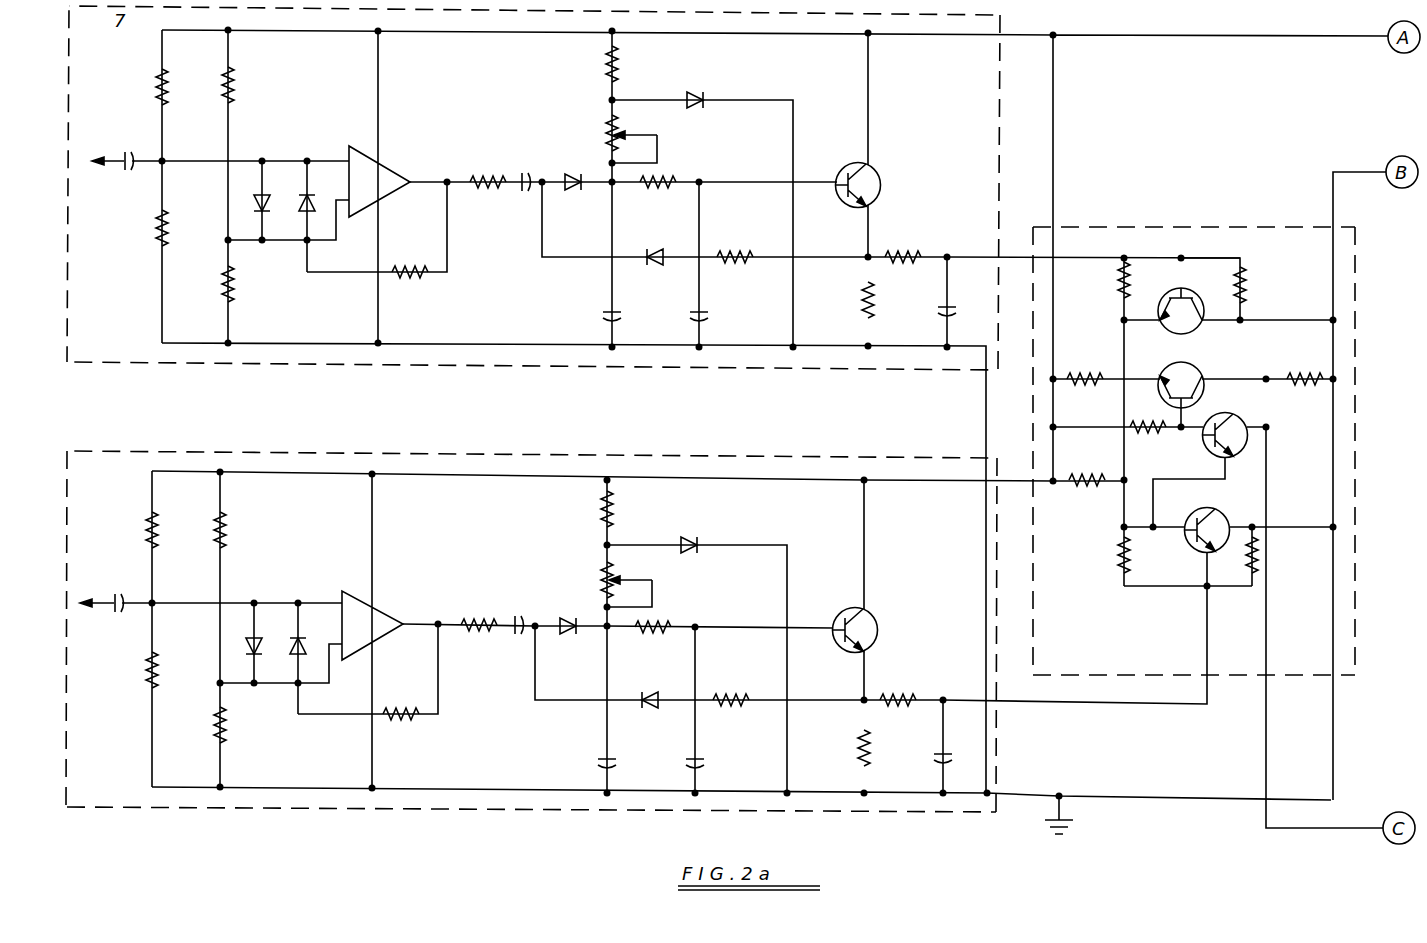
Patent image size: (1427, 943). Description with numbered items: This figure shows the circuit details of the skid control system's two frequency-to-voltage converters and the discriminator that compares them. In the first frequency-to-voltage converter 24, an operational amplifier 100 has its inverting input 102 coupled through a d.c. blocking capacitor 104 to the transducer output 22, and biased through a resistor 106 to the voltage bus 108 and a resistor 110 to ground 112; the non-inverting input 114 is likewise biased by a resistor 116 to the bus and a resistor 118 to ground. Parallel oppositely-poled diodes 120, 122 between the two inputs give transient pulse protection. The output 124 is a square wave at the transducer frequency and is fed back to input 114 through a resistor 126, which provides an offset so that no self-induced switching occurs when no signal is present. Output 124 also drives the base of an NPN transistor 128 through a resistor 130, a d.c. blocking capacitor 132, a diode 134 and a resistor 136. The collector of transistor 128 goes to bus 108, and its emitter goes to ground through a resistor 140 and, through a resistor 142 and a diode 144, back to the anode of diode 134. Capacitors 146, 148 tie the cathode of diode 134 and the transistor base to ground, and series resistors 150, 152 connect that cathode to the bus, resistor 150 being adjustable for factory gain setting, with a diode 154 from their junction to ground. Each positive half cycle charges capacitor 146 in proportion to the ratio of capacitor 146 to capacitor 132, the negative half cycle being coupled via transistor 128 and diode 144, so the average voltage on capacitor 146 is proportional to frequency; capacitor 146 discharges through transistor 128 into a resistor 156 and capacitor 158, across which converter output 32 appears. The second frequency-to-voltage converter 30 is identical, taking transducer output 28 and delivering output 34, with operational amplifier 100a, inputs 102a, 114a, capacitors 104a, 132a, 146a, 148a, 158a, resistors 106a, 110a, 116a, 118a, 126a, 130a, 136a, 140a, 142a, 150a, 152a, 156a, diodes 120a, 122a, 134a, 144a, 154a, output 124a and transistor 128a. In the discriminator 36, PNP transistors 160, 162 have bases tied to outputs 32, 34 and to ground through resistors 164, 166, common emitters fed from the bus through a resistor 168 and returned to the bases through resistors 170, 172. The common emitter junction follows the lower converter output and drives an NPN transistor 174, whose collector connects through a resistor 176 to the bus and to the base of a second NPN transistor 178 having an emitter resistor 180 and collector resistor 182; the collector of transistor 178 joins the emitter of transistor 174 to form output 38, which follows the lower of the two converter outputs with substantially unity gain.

The transducer output 22 is at (119, 174).
The frequency-to-voltage converter 24 is at (533, 188).
The transducer output 28 is at (111, 616).
The frequency-to-voltage converter 30 is at (262, 452).
The converter output 32 is at (1015, 257).
The converter output 34 is at (1028, 703).
The discriminator 36 is at (1215, 224).
The discriminator output 38 is at (1263, 698).
The operational amplifier 100 is at (378, 180).
The inverting input 102 is at (350, 147).
The d.c. blocking capacitor 104 is at (130, 150).
The resistor 106 is at (163, 91).
The voltage bus 108 is at (1198, 35).
The resistor 110 is at (157, 227).
The ground 112 is at (458, 343).
The non-inverting input 114 is at (350, 208).
The resistor 116 is at (232, 80).
The resistor 118 is at (238, 287).
The diode 120 is at (299, 192).
The diode 122 is at (253, 200).
The output 124 is at (413, 180).
The resistor 126 is at (407, 280).
The NPN transistor 128 is at (883, 182).
The resistor 130 is at (493, 175).
The d.c. blocking capacitor 132 is at (525, 173).
The diode 134 is at (580, 173).
The resistor 136 is at (670, 180).
The resistor 140 is at (865, 302).
The resistor 142 is at (740, 247).
The diode 144 is at (654, 247).
The capacitor 146 is at (602, 318).
The capacitor 148 is at (697, 320).
The adjustable resistor 150 is at (617, 122).
The resistor 152 is at (617, 58).
The diode 154 is at (697, 93).
The resistor 156 is at (905, 250).
The capacitor 158 is at (933, 305).
The operational amplifier 100a is at (377, 620).
The inverting input 102a is at (343, 593).
The d.c. blocking capacitor 104a is at (118, 595).
The resistor 106a is at (150, 540).
The resistor 110a is at (162, 673).
The non-inverting input 114a is at (340, 650).
The resistor 116a is at (230, 512).
The resistor 118a is at (228, 718).
The diode 120a is at (298, 633).
The diode 122a is at (253, 633).
The output 124a is at (404, 635).
The resistor 126a is at (398, 720).
The NPN transistor 128a is at (873, 630).
The resistor 130a is at (483, 613).
The d.c. blocking capacitor 132a is at (524, 617).
The diode 134a is at (573, 635).
The resistor 136a is at (671, 622).
The resistor 140a is at (857, 740).
The resistor 142a is at (730, 690).
The diode 144a is at (646, 691).
The capacitor 146a is at (598, 761).
The capacitor 148a is at (703, 761).
The adjustable resistor 150a is at (614, 565).
The resistor 152a is at (614, 502).
The diode 154a is at (698, 540).
The resistor 156a is at (886, 695).
The capacitor 158a is at (943, 759).
The PNP transistor 160 is at (1200, 328).
The PNP transistor 162 is at (1226, 517).
The resistor 164 is at (1245, 278).
The resistor 166 is at (1263, 560).
The resistor 168 is at (1085, 478).
The resistor 170 is at (1118, 285).
The resistor 172 is at (1120, 547).
The NPN transistor 174 is at (1238, 408).
The resistor 176 is at (1145, 437).
The NPN transistor 178 is at (1200, 368).
The resistor 180 is at (1085, 377).
The resistor 182 is at (1297, 377).